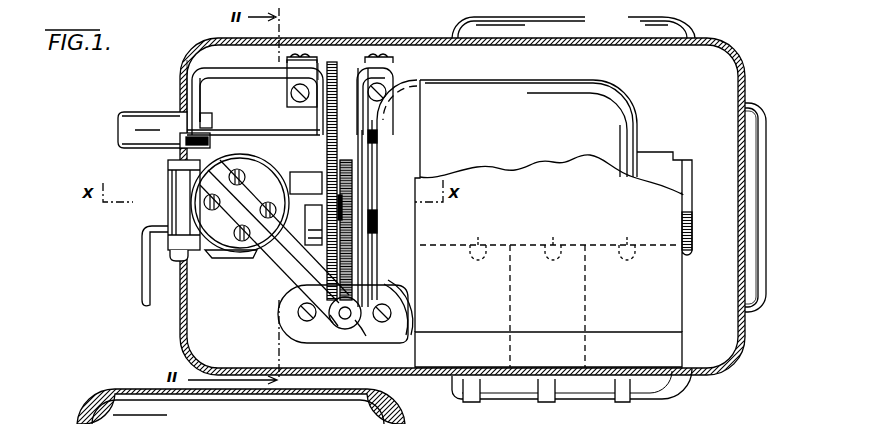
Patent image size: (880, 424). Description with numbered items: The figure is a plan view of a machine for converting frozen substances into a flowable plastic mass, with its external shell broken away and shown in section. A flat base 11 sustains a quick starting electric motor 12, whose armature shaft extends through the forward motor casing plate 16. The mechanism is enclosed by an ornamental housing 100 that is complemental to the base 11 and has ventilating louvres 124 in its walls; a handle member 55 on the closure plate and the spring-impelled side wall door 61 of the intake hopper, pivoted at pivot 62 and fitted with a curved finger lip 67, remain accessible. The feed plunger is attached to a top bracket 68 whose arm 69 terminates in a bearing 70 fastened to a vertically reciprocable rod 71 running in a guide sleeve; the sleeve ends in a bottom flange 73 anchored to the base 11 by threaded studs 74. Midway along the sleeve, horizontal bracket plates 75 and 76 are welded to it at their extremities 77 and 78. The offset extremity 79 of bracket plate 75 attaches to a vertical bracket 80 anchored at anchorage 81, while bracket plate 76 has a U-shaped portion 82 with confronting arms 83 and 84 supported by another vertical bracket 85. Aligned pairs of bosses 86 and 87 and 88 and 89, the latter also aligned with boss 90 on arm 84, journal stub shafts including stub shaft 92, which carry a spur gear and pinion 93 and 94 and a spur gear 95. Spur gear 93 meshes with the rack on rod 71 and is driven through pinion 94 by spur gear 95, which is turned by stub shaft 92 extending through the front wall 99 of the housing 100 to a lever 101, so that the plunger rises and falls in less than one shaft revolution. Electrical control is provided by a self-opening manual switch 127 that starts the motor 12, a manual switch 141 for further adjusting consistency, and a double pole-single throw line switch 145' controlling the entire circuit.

The base 11 is at (718, 86).
The electric motor 12 is at (597, 100).
The forward motor casing plate 16 is at (412, 128).
The handle member 55 is at (142, 300).
The side wall door 61 is at (215, 256).
The pivot 62 is at (176, 256).
The curved lip 67 is at (172, 205).
The top bracket 68 is at (253, 188).
The arm 69 is at (280, 247).
The bearing 70 is at (346, 320).
The rod 71 is at (349, 310).
The bottom flange 73 is at (287, 318).
The threaded studs 74 is at (298, 311).
The horizontal bracket plate 75 is at (358, 176).
The horizontal bracket plate 76 is at (320, 192).
The extremity 77 is at (358, 326).
The extremity 78 is at (331, 327).
The offset extremity 79 is at (373, 62).
The vertical bracket 80 is at (390, 62).
The anchorage 81 is at (385, 92).
The U-shaped portion 82 is at (240, 72).
The arm 83 is at (316, 80).
The arm 84 is at (200, 90).
The vertical bracket 85 is at (290, 60).
The boss 86 is at (292, 90).
The boss 87 is at (316, 212).
The boss 88 is at (370, 126).
The boss 89 is at (303, 128).
The boss 90 is at (182, 148).
The stub shaft 92 is at (243, 125).
The spur gear 93 is at (352, 250).
The pinion 94 is at (350, 208).
The spur gear 95 is at (333, 62).
The front wall 99 is at (184, 92).
The housing 100 is at (628, 38).
The lever 101 is at (130, 125).
The louvres 124 is at (672, 34).
The manual switch 127 is at (478, 232).
The manual switch 141 is at (553, 232).
The line switch 145' is at (632, 232).